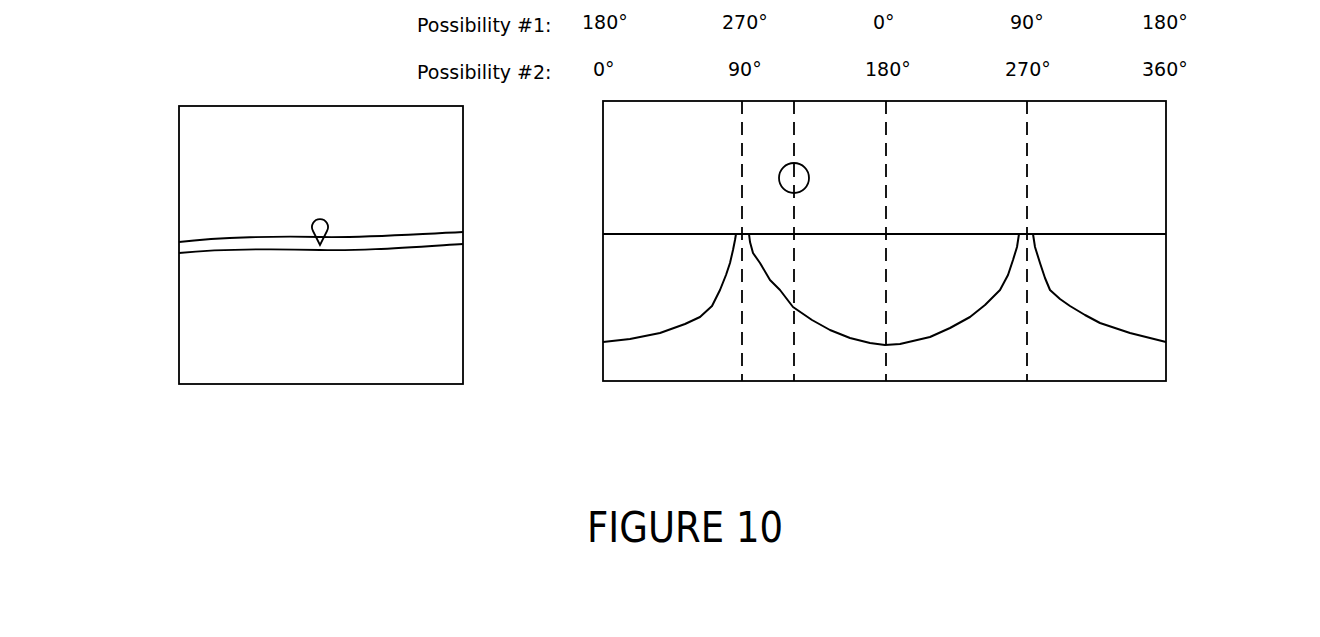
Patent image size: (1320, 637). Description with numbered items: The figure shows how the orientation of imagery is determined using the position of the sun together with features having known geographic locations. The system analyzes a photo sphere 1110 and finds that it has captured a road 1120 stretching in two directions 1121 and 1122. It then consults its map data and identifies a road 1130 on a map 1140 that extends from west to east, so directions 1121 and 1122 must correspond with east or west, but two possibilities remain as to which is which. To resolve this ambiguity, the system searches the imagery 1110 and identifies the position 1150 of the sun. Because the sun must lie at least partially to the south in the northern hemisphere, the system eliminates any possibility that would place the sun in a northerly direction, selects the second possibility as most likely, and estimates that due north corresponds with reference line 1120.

The photo sphere 1110 is at (1166, 116).
The road 1120 is at (902, 365).
The first direction 1121 is at (742, 348).
The second direction 1122 is at (1027, 348).
The position of the sun 1150 is at (794, 348).
The road on map 1130 is at (425, 235).
The map 1140 is at (463, 131).